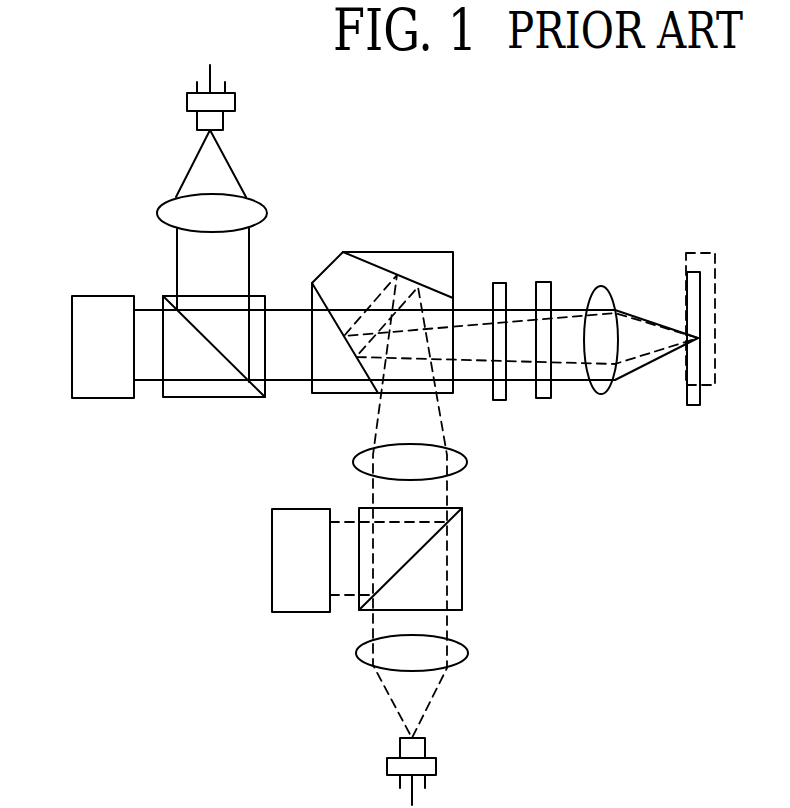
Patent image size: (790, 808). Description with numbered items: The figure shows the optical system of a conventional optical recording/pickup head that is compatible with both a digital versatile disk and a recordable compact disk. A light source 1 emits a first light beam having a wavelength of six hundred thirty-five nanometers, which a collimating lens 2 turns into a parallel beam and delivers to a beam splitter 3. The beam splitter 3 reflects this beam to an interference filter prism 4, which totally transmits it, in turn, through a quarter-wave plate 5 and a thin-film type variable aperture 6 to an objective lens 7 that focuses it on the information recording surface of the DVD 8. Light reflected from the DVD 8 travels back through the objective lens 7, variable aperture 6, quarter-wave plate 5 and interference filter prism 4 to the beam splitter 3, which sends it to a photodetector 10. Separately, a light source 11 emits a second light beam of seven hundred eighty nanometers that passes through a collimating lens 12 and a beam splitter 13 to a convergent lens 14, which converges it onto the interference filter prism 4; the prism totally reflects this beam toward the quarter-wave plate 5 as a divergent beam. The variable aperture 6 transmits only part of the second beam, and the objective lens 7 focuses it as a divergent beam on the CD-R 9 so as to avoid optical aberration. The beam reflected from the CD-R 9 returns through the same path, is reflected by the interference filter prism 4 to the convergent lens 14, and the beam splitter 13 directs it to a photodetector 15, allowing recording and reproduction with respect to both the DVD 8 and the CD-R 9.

The light source 1 is at (235, 104).
The collimating lens 2 is at (267, 214).
The beam splitter 3 is at (218, 397).
The interference filter prism 4 is at (397, 252).
The quarter-wave plate 5 is at (500, 283).
The thin-film type variable aperture 6 is at (543, 398).
The objective lens 7 is at (602, 286).
The digital versatile disk 8 is at (694, 405).
The recordable compact disk 9 is at (715, 291).
The photodetector 10 is at (72, 348).
The light source 11 is at (436, 768).
The collimating lens 12 is at (468, 655).
The beam splitter 13 is at (462, 568).
The convergent lens 14 is at (467, 464).
The photodetector 15 is at (272, 561).